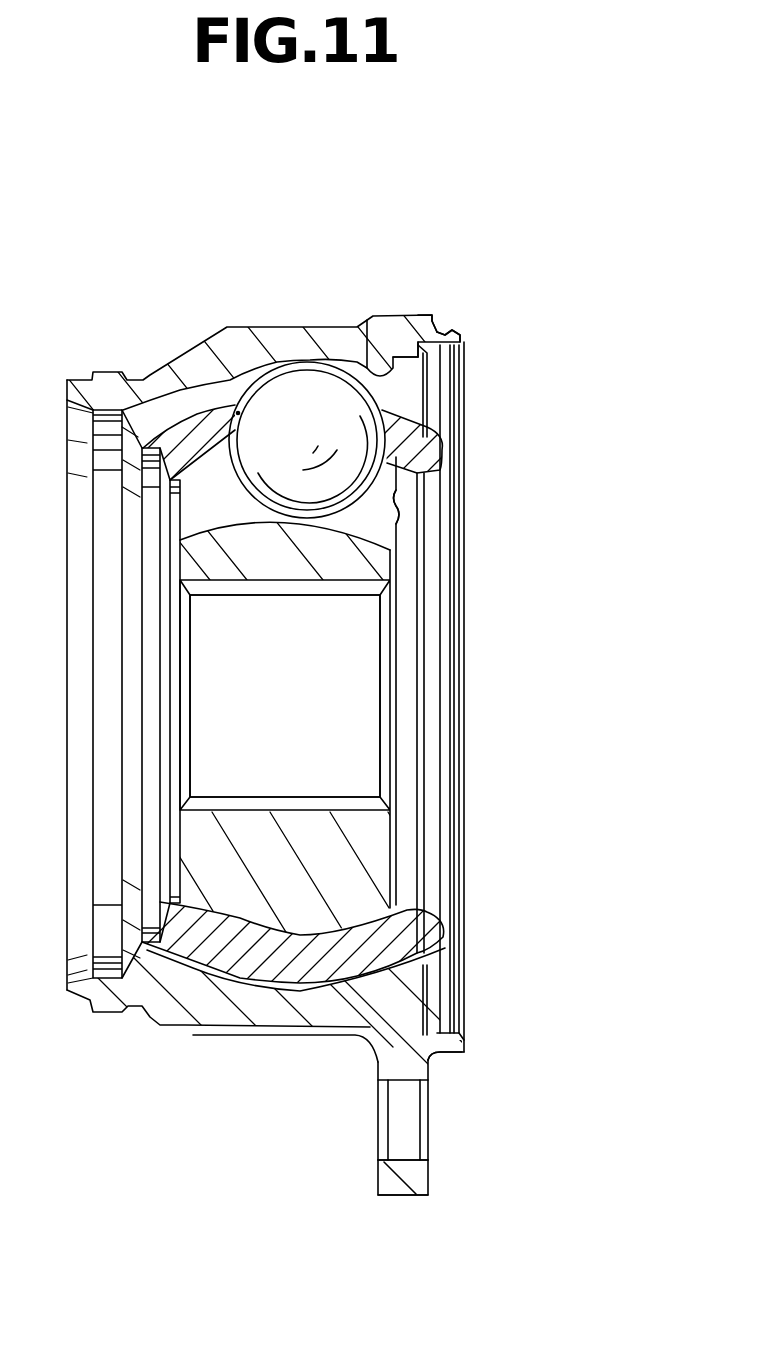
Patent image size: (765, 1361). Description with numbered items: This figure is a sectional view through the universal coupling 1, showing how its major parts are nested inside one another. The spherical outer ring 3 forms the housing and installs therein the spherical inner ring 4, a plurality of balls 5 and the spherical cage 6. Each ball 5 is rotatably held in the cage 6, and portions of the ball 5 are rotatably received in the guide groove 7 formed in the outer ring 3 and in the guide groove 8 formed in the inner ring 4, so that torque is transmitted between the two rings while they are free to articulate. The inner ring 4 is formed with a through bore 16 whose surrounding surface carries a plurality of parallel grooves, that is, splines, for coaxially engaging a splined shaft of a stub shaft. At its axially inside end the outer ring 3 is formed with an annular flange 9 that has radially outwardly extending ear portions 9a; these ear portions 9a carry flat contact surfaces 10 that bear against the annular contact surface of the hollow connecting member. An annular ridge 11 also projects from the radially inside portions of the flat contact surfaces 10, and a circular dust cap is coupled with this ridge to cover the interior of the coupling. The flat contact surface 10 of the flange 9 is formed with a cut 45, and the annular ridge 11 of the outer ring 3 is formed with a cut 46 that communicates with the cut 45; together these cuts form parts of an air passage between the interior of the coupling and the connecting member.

The universal coupling 1 is at (142, 300).
The spherical outer ring 3 is at (281, 340).
The spherical inner ring 4 is at (228, 565).
The ball 5 is at (258, 395).
The spherical cage 6 is at (442, 455).
The guide groove 7 is at (367, 320).
The guide groove 8 is at (395, 558).
The annular flange 9 is at (383, 1066).
The ear portion 9a is at (403, 1182).
The flat contact surface 10 is at (432, 1068).
The annular ridge 11 is at (462, 1043).
The through bore 16 is at (235, 805).
The cut 45 is at (421, 316).
The cut 46 is at (447, 330).